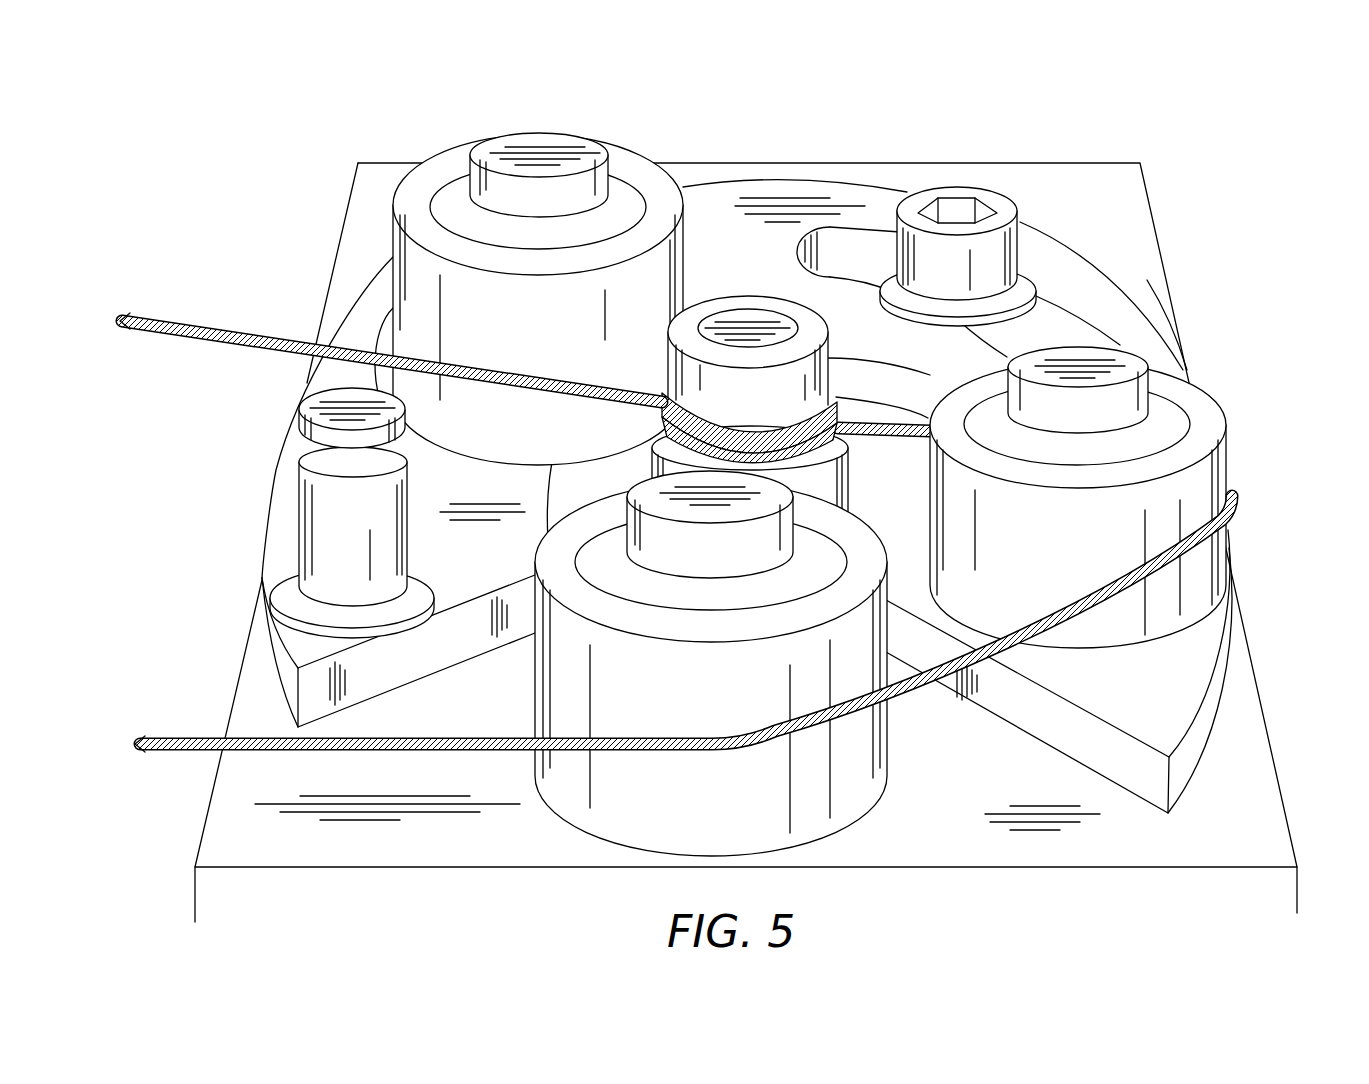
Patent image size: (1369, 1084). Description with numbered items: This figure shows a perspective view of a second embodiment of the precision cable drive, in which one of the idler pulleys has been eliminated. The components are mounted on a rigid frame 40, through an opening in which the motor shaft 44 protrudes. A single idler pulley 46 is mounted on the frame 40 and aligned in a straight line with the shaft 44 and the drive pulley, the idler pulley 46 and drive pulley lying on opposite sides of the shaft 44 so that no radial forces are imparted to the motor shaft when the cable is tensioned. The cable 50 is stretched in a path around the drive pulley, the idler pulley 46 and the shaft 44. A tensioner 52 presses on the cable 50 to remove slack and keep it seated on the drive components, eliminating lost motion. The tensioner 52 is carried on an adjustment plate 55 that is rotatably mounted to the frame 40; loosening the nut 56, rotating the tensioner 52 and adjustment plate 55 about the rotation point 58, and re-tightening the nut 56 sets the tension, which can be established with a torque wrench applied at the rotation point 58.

The rigid frame 40 is at (1255, 778).
The shaft 44 is at (756, 303).
The idler pulleys 46 is at (498, 150).
The cable 50 is at (178, 748).
The tensioner 52 is at (1190, 388).
The adjustment plate 55 is at (1023, 723).
The nut 56 is at (878, 734).
The rotation point 58 is at (338, 537).